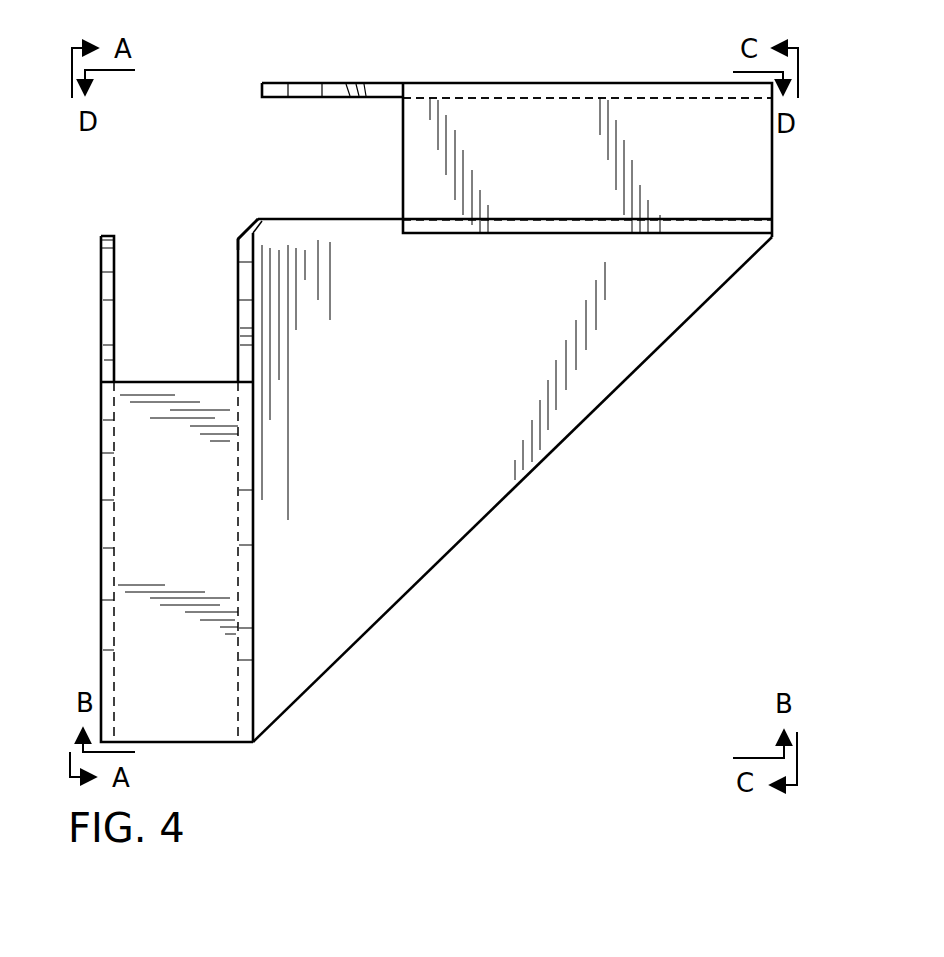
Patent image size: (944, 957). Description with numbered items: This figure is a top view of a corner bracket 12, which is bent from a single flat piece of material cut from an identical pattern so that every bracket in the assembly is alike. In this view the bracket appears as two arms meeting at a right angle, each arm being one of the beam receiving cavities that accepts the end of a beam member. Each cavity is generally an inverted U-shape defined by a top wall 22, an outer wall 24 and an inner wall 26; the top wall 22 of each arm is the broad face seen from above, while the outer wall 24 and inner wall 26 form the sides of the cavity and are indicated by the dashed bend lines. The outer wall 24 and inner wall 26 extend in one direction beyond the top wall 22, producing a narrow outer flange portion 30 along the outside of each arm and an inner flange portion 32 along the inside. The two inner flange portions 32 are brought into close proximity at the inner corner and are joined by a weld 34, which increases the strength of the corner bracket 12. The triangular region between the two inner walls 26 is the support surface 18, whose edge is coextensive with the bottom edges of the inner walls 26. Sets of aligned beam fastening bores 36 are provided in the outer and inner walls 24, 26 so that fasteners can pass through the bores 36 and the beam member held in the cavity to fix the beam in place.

The corner bracket 12 is at (636, 516).
The support surface 18 is at (603, 363).
The top wall 22 is at (725, 181).
The outer wall 24 is at (100, 440).
The inner wall 26 is at (548, 236).
The outer flange portion 30 is at (365, 98).
The inner flange portion 32 is at (353, 236).
The weld 34 is at (247, 228).
The beam fastening bores 36 is at (690, 82).